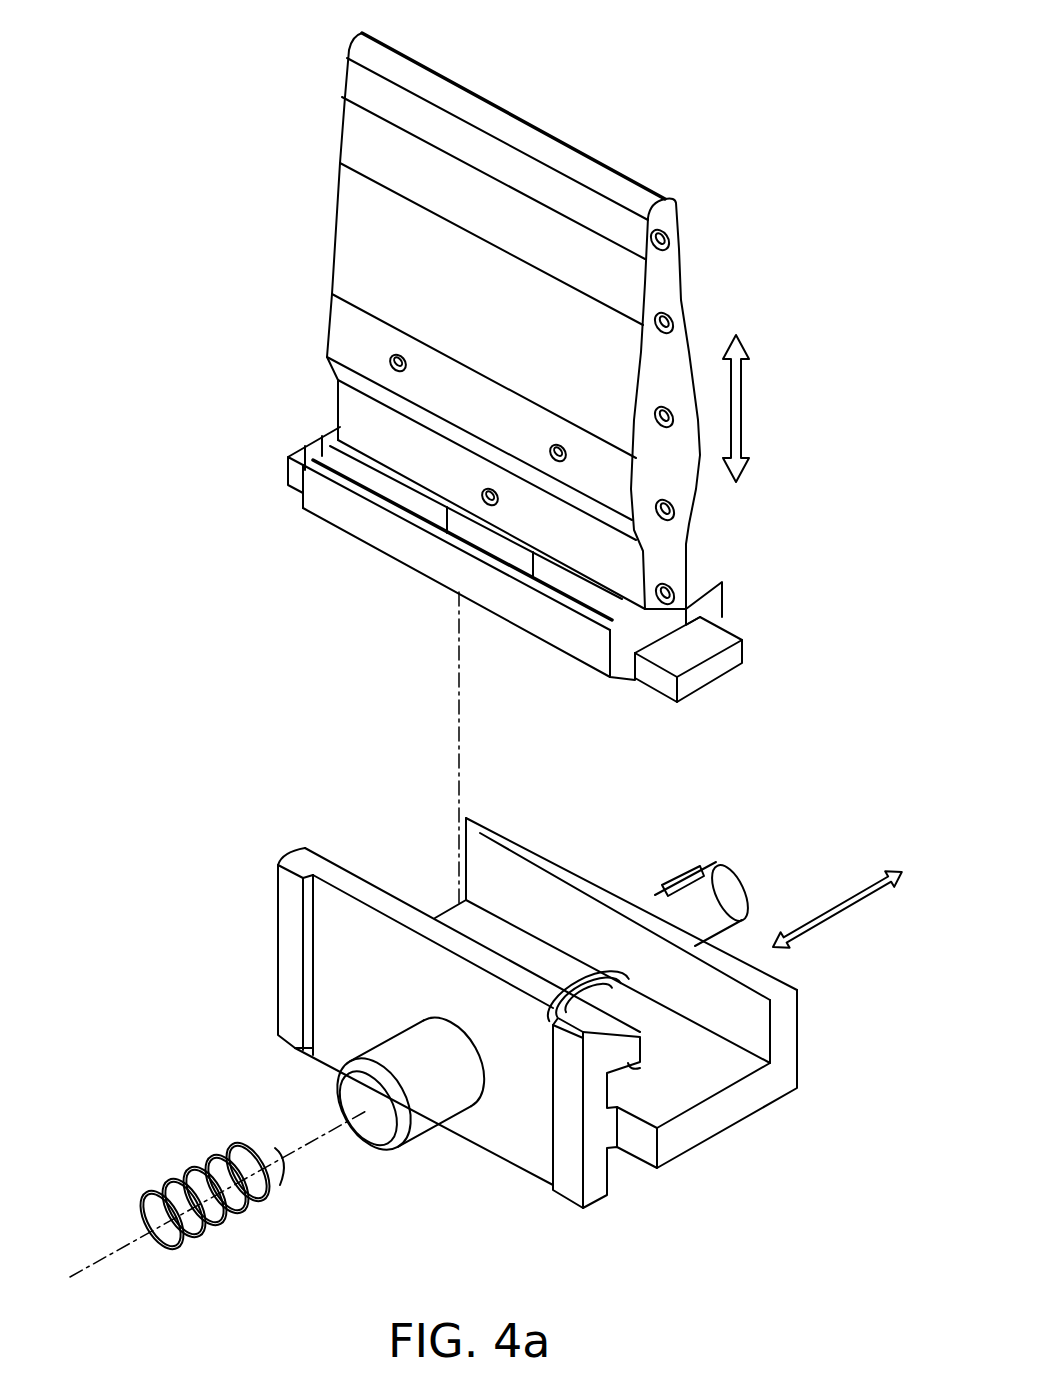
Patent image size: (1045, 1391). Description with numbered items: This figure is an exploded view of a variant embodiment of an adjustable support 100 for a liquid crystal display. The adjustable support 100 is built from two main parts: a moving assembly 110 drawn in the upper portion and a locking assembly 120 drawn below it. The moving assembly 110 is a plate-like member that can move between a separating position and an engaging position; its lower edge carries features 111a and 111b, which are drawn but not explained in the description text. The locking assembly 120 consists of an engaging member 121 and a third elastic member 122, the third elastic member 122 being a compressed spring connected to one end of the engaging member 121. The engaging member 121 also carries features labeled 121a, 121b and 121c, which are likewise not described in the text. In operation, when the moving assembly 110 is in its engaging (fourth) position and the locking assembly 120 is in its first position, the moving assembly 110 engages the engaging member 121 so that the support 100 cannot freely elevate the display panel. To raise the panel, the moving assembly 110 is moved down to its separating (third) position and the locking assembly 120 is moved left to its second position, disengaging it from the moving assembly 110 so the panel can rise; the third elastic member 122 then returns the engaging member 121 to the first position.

The adjustable support 100 is at (118, 37).
The moving assembly 110 is at (363, 258).
The mounting block 111a is at (747, 648).
The mounting rail 111b is at (623, 686).
The locking assembly 120 is at (267, 1060).
The engaging member 121 is at (347, 1068).
The clamp plate 121a is at (633, 1010).
The spring seat hole 121b is at (633, 1010).
The guide pin 121c is at (730, 897).
The third elastic member 122 is at (153, 1187).